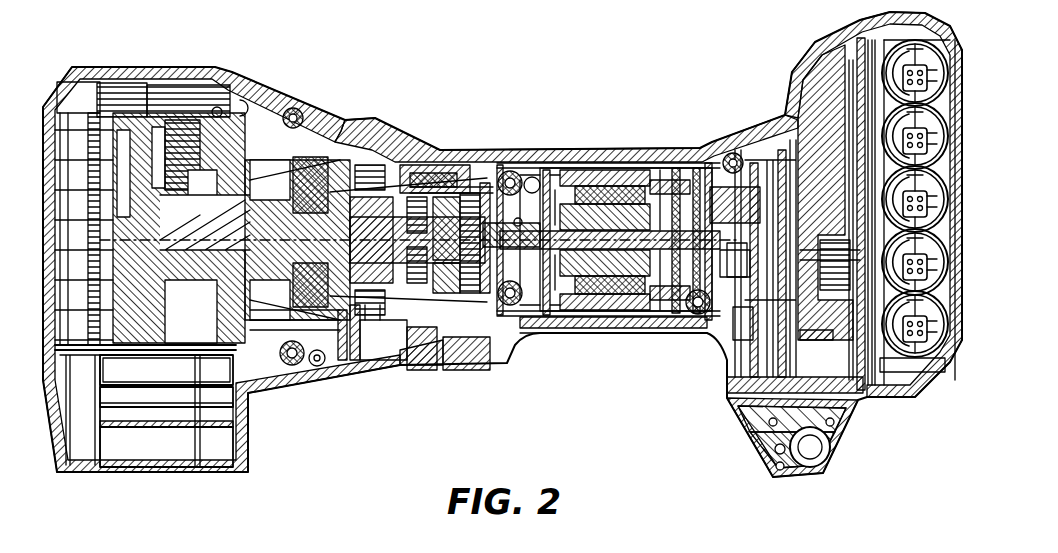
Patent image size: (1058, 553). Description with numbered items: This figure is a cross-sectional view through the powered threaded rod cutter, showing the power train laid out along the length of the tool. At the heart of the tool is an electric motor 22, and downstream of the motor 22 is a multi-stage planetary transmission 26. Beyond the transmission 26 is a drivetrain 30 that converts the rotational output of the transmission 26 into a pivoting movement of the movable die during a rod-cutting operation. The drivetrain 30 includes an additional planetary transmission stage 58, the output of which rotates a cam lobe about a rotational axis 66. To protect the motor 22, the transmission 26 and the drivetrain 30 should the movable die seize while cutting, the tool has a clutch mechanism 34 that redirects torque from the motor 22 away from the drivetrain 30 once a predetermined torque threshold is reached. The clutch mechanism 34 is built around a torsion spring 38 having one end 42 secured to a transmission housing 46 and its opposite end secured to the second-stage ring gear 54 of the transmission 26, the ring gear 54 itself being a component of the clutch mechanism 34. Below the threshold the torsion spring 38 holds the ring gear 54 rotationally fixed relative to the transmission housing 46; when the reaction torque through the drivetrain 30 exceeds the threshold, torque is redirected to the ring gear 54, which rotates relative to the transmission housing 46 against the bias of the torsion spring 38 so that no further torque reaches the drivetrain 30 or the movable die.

The electric motor 22 is at (603, 332).
The multi-stage planetary transmission 26 is at (483, 158).
The drivetrain 30 is at (280, 363).
The clutch mechanism 34 is at (408, 168).
The torsion spring 38 is at (383, 150).
The end 42 is at (403, 363).
The transmission housing 46 is at (343, 367).
The second-stage ring gear 54 is at (437, 163).
The additional planetary transmission stage 58 is at (320, 370).
The rotational axis 66 is at (235, 237).